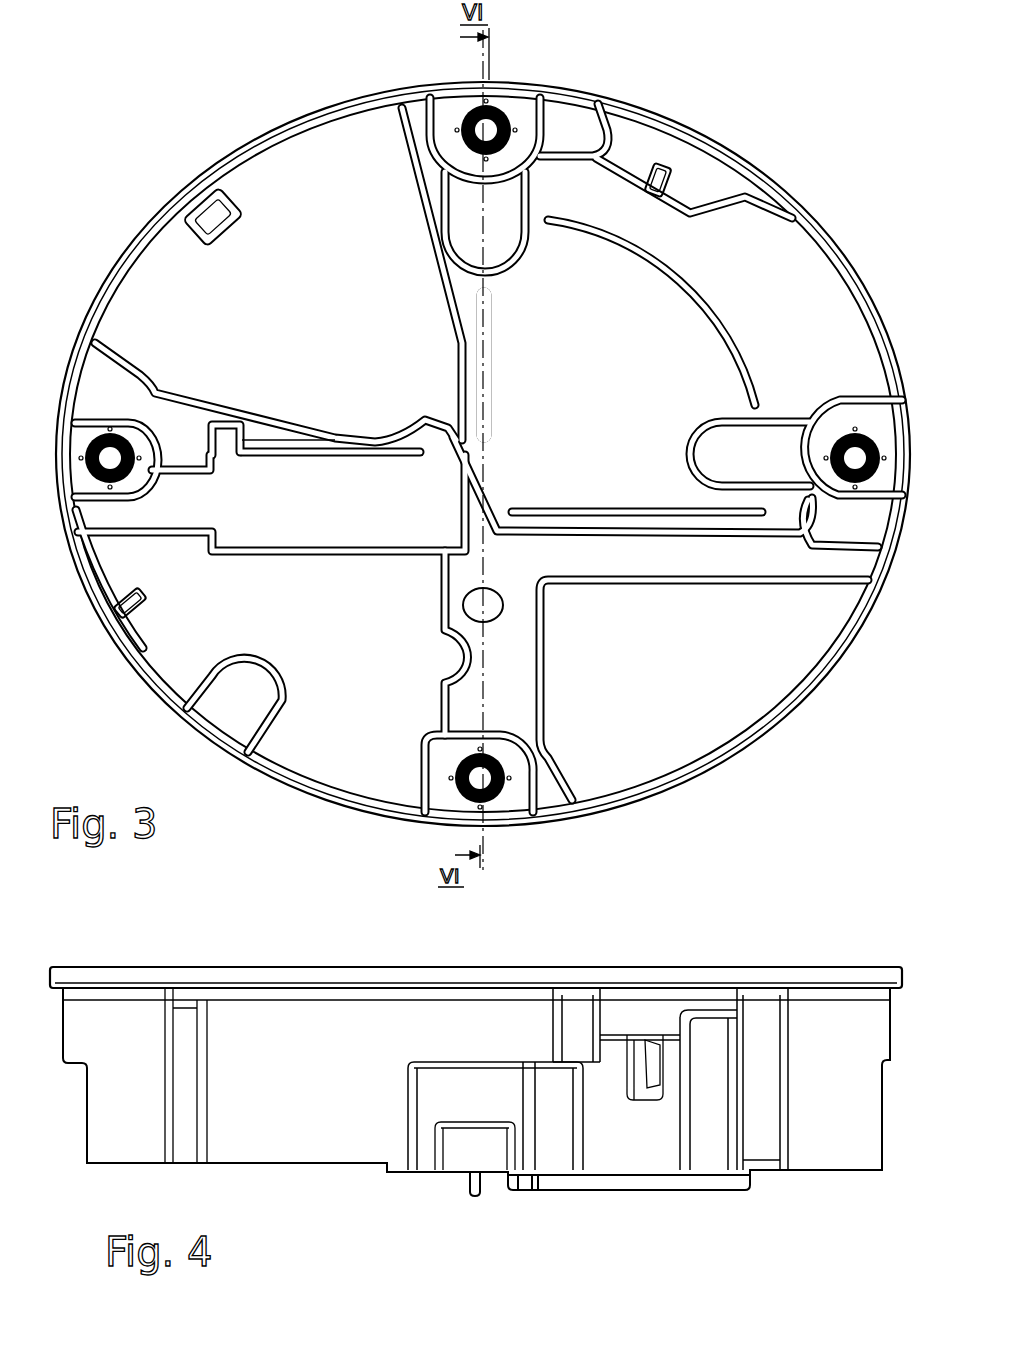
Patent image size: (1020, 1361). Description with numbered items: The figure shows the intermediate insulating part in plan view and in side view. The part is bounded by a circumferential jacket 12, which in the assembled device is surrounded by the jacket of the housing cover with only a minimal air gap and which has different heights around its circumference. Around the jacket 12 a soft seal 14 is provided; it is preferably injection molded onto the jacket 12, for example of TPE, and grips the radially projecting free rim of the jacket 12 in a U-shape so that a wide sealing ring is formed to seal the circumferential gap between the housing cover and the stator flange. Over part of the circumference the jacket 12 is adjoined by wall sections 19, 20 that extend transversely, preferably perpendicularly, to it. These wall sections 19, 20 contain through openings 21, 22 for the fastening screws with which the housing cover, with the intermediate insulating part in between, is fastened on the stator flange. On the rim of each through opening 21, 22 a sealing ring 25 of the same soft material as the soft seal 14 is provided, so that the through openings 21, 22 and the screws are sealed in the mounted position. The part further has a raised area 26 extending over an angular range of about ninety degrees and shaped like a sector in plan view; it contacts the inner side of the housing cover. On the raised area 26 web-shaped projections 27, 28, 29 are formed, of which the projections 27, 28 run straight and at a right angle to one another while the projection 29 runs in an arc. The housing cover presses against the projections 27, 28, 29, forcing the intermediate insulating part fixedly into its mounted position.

In FIG. 3, the jacket 12 is at (700, 130).
In FIG. 4, the soft seal 14 is at (752, 968).
In FIG. 3, the wall section 19 is at (517, 698).
In FIG. 3, the wall section 20 is at (508, 156).
In FIG. 3, the through opening 21 is at (480, 126).
In FIG. 3, the through opening 22 is at (845, 495).
In FIG. 3, the sealing ring 25 is at (838, 493).
In FIG. 3, the raised area 26 is at (652, 357).
In FIG. 3, the web-shaped projection 27 is at (588, 510).
In FIG. 3, the web-shaped projection 28 is at (492, 378).
In FIG. 4, the web-shaped projection 28 is at (468, 1182).
In FIG. 3, the web-shaped projection 29 is at (633, 262).
In FIG. 4, the web-shaped projection 29 is at (638, 1185).